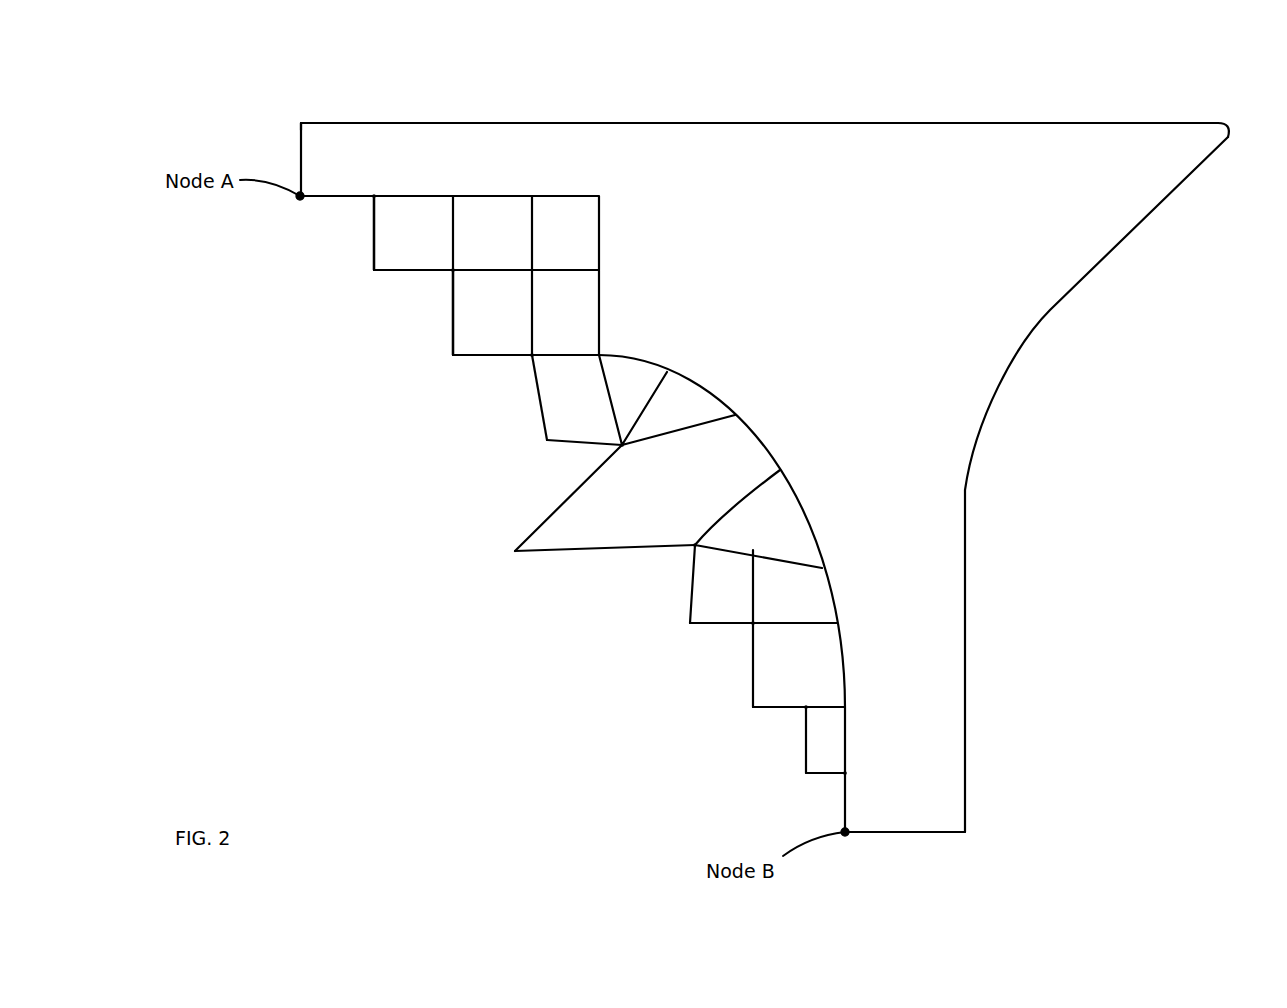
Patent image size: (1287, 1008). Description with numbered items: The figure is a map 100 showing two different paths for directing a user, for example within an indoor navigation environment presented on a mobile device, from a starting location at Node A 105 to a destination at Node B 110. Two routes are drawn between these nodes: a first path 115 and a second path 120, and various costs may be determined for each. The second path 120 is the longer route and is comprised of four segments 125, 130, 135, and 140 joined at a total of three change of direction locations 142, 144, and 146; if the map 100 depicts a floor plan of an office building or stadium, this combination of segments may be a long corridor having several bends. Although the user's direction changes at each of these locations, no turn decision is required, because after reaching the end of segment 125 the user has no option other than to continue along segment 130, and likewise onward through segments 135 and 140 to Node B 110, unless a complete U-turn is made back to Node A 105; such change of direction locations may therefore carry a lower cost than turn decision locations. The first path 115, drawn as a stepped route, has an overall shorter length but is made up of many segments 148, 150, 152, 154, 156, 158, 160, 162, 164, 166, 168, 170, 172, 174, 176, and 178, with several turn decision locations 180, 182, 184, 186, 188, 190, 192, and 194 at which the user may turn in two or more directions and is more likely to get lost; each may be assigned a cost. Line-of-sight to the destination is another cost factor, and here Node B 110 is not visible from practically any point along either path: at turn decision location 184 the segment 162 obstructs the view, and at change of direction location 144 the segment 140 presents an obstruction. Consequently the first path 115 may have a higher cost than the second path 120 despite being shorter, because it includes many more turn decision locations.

The map 100 is at (166, 110).
The Node A 105 is at (300, 198).
The Node B 110 is at (845, 834).
The first path 115 is at (532, 383).
The second path 120 is at (788, 122).
The segment 125 is at (301, 160).
The segment 130 is at (500, 122).
The segment 135 is at (1128, 242).
The segment 140 is at (892, 834).
The change of direction location 142 is at (301, 122).
The change of direction location 144 is at (1231, 128).
The change of direction location 146 is at (965, 834).
The segment 148 is at (346, 195).
The segment 150 is at (374, 240).
The segment 152 is at (410, 272).
The segment 154 is at (453, 330).
The segment 156 is at (490, 357).
The segment 158 is at (540, 412).
The segment 160 is at (565, 448).
The segment 162 is at (545, 516).
The segment 164 is at (570, 553).
The segment 166 is at (690, 590).
The segment 168 is at (718, 625).
The segment 170 is at (753, 676).
The segment 172 is at (770, 709).
The segment 174 is at (806, 748).
The segment 176 is at (825, 775).
The segment 178 is at (847, 802).
The turn decision location 180 is at (375, 195).
The turn decision location 182 is at (454, 268).
The turn decision location 184 is at (533, 353).
The turn decision location 186 is at (623, 447).
The turn decision location 188 is at (694, 543).
The turn decision location 190 is at (754, 621).
The turn decision location 192 is at (807, 706).
The turn decision location 194 is at (846, 771).